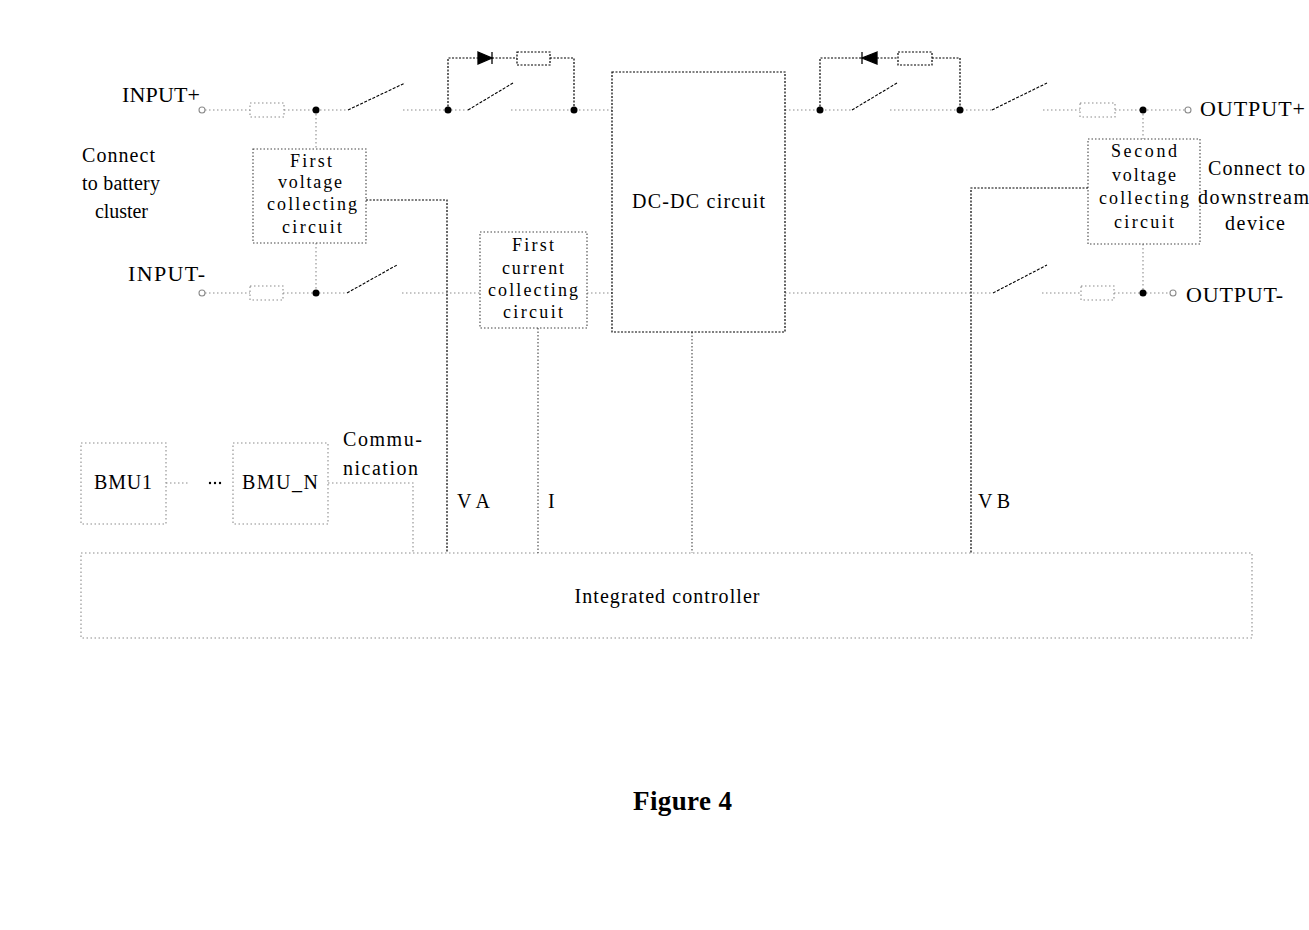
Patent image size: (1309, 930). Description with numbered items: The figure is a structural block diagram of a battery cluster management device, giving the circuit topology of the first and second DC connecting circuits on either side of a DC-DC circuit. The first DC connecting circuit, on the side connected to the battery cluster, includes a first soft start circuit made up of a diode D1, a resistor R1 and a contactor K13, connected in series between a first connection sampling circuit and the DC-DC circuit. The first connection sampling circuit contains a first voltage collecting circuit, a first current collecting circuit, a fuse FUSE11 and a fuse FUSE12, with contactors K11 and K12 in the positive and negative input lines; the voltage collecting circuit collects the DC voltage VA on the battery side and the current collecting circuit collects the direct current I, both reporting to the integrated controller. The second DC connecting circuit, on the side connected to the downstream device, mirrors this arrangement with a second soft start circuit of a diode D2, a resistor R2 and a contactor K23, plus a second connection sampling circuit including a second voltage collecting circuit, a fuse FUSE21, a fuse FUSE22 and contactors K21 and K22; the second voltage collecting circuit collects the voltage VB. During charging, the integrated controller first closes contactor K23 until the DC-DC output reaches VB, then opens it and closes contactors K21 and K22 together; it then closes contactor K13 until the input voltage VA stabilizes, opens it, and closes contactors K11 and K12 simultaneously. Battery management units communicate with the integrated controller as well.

The fuse FUSE11 is at (275, 98).
The fuse FUSE12 is at (263, 311).
The fuse FUSE21 is at (1097, 98).
The fuse FUSE22 is at (1099, 311).
The contactor K11 is at (376, 88).
The contactor K12 is at (372, 271).
The contactor K13 is at (493, 114).
The contactor K21 is at (1016, 88).
The contactor K22 is at (1017, 271).
The contactor K23 is at (875, 114).
The diode D1 is at (483, 46).
The diode D2 is at (866, 46).
The resistor R1 is at (533, 46).
The resistor R2 is at (915, 46).